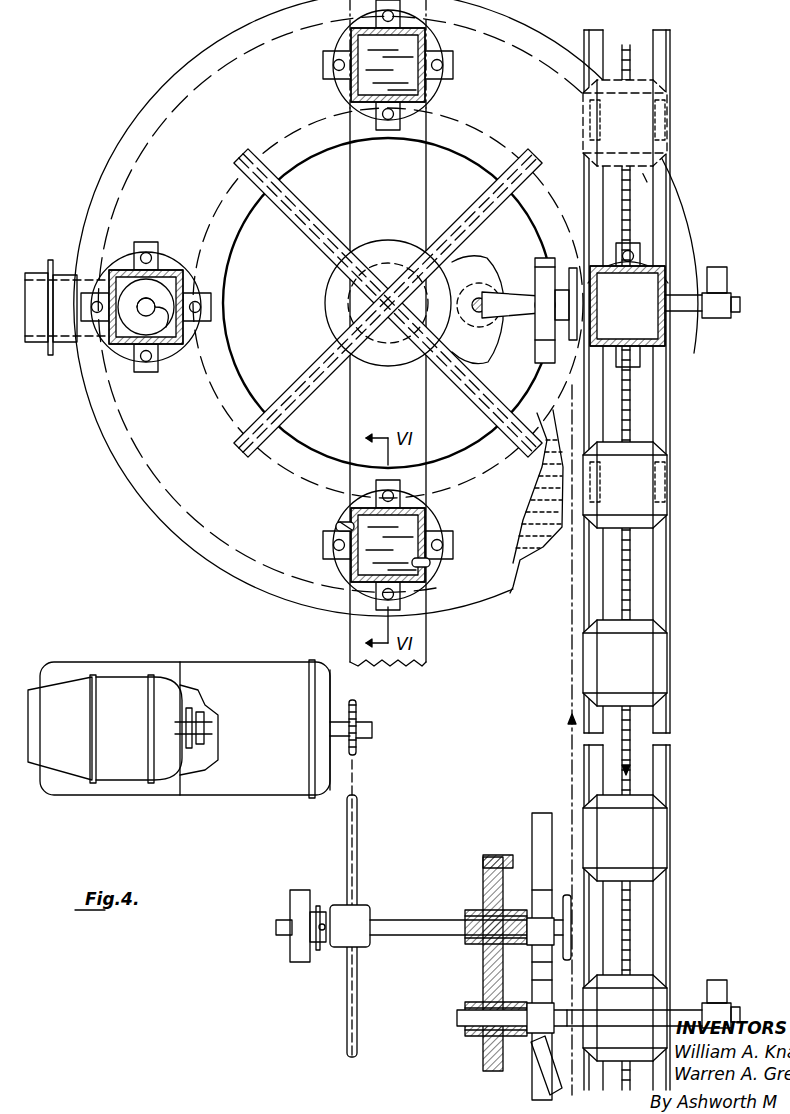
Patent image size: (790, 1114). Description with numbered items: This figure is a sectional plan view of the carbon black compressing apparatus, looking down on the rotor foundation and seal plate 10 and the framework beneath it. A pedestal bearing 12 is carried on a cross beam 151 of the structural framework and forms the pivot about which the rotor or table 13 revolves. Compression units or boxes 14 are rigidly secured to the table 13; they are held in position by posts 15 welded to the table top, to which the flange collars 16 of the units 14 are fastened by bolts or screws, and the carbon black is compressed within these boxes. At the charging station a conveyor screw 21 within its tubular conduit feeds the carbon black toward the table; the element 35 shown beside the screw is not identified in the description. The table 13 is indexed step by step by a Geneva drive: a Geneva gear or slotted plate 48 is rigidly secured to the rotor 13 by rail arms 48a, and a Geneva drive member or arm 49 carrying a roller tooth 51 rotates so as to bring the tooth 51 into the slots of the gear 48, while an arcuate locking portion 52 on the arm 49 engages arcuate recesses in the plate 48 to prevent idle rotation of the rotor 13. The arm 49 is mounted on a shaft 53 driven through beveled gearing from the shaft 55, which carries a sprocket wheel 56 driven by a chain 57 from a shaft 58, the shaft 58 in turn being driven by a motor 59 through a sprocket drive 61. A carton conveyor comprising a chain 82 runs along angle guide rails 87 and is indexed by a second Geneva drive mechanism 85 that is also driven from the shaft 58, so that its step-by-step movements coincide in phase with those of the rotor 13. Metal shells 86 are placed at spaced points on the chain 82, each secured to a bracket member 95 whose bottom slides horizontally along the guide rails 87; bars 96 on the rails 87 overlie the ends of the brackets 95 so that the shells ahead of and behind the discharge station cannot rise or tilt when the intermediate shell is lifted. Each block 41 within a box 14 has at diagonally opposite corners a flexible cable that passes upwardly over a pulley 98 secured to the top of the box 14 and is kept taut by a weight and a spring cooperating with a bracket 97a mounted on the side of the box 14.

The rotor foundation and seal plate 10 is at (215, 85).
The pedestal bearing 12 is at (390, 270).
The rotor or table 13 is at (160, 114).
The compression unit or box 14 is at (162, 272).
The post 15 is at (455, 66).
The flange collar 16 is at (440, 105).
The conveyor screw 21 is at (160, 296).
The drive shaft coupling 35 is at (45, 272).
The block 41 is at (400, 530).
The Geneva gear or slotted plate 48 is at (345, 296).
The rail arms 48a is at (310, 372).
The Geneva drive member or arm 49 is at (512, 300).
The roller tooth 51 is at (540, 290).
The arcuate locking portion 52 is at (488, 352).
The shaft 53 is at (479, 298).
The shaft 55 is at (736, 300).
The sprocket wheel 56 is at (580, 300).
The chain 57 is at (568, 772).
The shaft 58 is at (404, 925).
The motor 59 is at (122, 775).
The sprocket drive 61 is at (356, 768).
The conveyor chain 82 is at (634, 772).
The Geneva drive mechanism 85 is at (494, 857).
The metal shell 86 is at (645, 838).
The angle guide rails 87 is at (660, 34).
The bracket member 95 is at (670, 96).
The bar 96 is at (668, 118).
The bracket 97a is at (338, 526).
The pulley 98 is at (340, 520).
The cross beam 151 is at (352, 178).